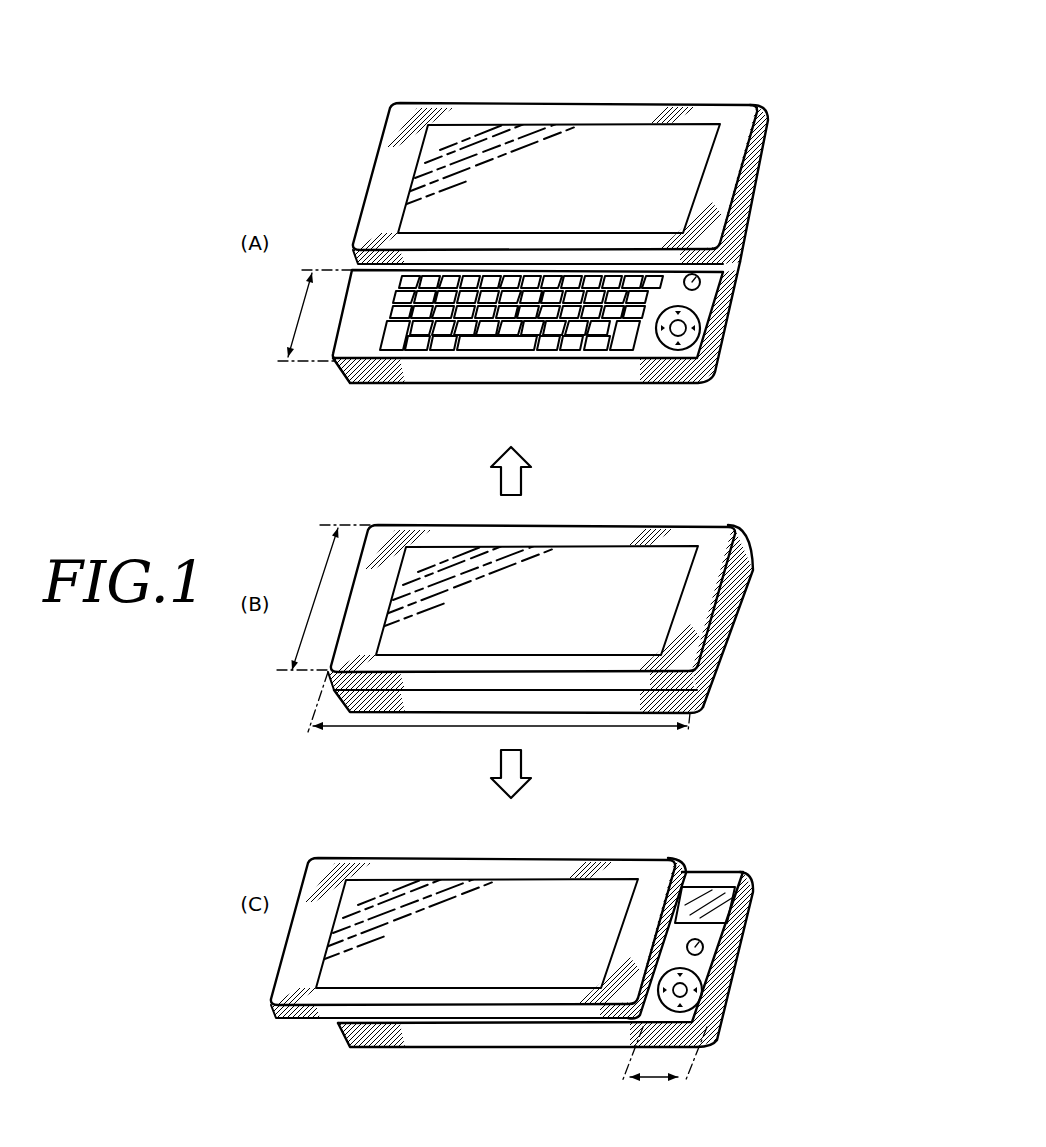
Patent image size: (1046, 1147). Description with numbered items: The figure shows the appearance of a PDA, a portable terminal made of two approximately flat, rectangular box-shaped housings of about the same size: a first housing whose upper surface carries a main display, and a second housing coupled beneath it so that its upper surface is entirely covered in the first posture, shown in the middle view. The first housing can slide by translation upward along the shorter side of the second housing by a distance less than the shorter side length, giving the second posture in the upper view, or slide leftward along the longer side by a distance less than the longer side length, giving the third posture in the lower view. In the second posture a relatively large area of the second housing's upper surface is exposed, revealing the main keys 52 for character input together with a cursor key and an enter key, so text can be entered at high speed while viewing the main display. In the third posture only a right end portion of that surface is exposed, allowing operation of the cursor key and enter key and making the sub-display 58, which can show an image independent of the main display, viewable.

The main keys 52 is at (480, 360).
The sub-display 58 is at (697, 895).